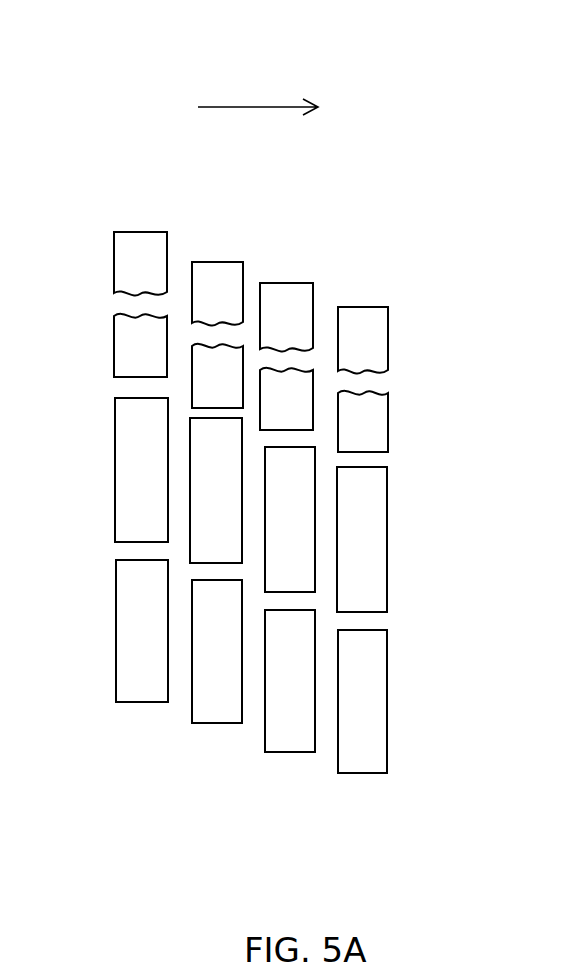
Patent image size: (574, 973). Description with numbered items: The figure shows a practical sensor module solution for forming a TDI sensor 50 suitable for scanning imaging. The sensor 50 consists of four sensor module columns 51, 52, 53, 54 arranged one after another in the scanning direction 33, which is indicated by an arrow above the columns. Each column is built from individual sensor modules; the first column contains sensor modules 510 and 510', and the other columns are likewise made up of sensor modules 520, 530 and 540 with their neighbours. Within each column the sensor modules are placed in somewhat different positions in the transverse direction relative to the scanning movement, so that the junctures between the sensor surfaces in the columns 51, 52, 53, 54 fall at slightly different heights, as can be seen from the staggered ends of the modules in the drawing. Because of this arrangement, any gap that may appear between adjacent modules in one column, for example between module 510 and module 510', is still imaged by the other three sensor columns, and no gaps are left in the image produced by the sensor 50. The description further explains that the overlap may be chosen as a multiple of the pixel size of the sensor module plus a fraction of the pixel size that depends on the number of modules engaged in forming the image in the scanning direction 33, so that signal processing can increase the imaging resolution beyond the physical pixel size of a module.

The scanning direction 33 is at (258, 87).
The TDI sensor 50 is at (70, 473).
The sensor module column 51 is at (363, 358).
The sensor module column 52 is at (287, 414).
The sensor module column 53 is at (216, 388).
The sensor module column 54 is at (141, 365).
The sensor module 510 is at (349, 741).
The sensor module 510' is at (414, 539).
The sensor module 520 is at (282, 737).
The sensor module 530 is at (215, 710).
The sensor module 540 is at (142, 685).